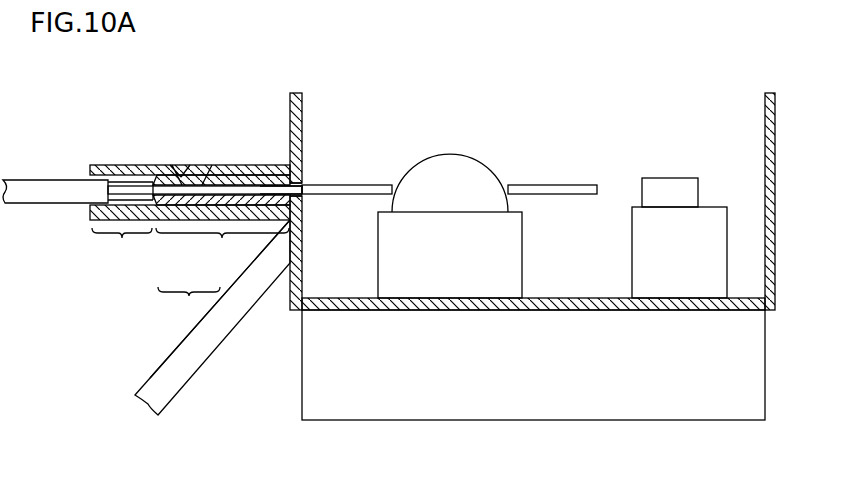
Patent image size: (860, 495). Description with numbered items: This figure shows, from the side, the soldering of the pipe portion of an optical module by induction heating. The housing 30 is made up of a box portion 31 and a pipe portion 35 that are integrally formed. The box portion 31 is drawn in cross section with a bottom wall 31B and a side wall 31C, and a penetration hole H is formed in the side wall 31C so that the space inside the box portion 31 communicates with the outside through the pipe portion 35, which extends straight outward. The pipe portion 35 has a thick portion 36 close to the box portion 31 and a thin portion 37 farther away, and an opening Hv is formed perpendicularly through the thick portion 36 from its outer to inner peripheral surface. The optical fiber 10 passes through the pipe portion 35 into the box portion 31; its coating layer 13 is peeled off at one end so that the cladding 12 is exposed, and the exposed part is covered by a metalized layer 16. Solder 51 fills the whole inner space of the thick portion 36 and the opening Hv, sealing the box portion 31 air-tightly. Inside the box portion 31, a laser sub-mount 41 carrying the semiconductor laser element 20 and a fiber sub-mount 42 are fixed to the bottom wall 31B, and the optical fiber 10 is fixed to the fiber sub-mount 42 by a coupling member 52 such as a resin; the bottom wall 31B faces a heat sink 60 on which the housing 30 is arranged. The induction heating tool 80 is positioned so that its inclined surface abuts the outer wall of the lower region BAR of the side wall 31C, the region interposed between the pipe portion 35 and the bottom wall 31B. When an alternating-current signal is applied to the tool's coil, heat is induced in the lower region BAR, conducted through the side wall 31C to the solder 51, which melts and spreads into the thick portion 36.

The optical fiber 10 is at (52, 173).
The coating layer 13 is at (46, 196).
The thin portion 37 is at (190, 211).
The thick portion 36 is at (221, 216).
The solder 51 is at (187, 175).
The opening Hv is at (163, 160).
The metalized layer 16 is at (283, 190).
The cladding 12 is at (330, 187).
The housing 30 is at (476, 234).
The box portion 31 is at (507, 225).
The side wall 31C is at (290, 127).
The bottom wall 31B is at (733, 312).
The pipe portion 35 is at (212, 317).
The induction heating tool 80 is at (151, 361).
The penetration hole H is at (307, 178).
The lower region BAR is at (317, 238).
The heat sink 60 is at (562, 403).
The fiber sub-mount 42 is at (520, 235).
The coupling member 52 is at (477, 177).
The laser sub-mount 41 is at (707, 220).
The semiconductor laser element 20 is at (680, 190).